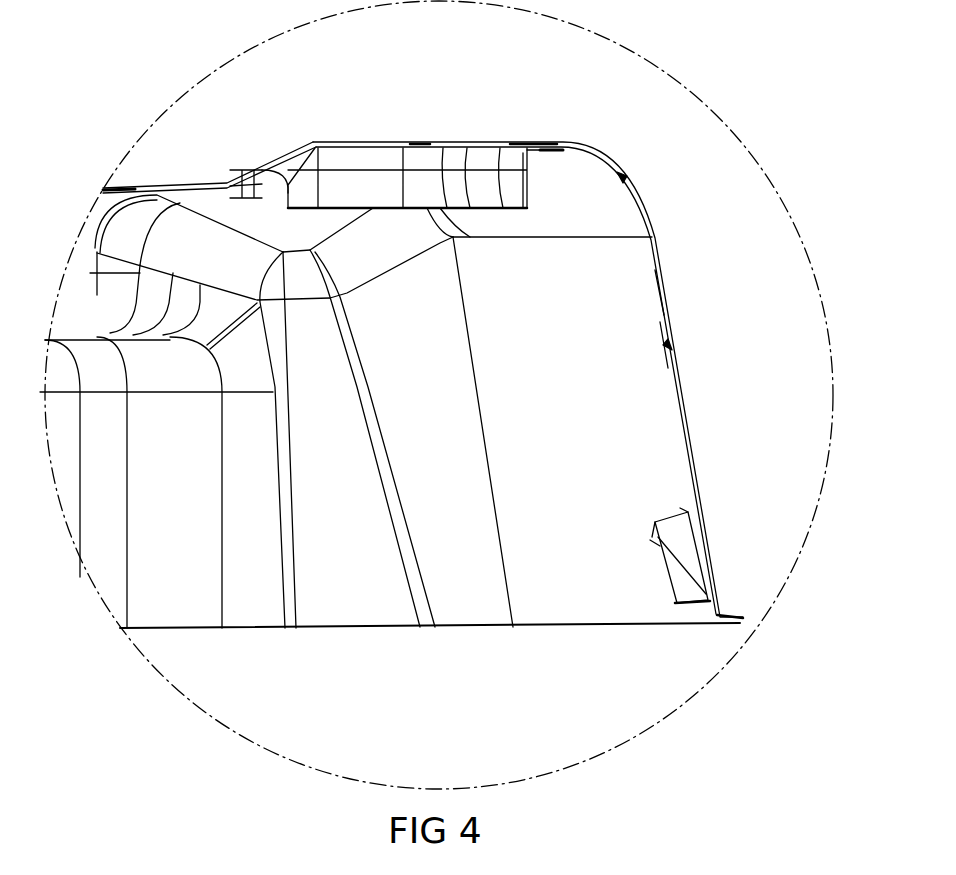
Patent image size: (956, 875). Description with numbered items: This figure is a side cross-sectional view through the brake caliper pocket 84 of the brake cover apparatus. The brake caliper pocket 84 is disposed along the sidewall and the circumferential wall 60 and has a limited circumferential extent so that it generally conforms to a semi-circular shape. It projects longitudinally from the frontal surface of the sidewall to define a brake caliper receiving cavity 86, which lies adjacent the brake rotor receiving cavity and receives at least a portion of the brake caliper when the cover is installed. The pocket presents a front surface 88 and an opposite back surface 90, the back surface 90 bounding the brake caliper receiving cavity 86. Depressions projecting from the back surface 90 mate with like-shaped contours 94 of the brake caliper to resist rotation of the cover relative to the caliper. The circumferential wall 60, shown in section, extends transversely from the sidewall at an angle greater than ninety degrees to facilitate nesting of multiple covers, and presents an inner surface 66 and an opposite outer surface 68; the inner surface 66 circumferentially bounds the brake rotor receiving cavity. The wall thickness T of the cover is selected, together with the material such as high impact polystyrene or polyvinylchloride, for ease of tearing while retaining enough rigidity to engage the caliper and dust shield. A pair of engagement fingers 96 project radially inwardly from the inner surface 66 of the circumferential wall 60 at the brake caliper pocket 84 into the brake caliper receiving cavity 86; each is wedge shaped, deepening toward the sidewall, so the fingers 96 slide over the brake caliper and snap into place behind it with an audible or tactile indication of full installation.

The circumferential wall 60 is at (683, 389).
The inner surface 66 is at (660, 325).
The outer surface 68 is at (670, 302).
The brake caliper pocket 84 is at (503, 90).
The brake caliper receiving cavity 86 is at (455, 580).
The front surface 88 is at (563, 142).
The back surface 90 is at (563, 152).
The like-shaped contours 94 is at (362, 185).
The engagement fingers 96 is at (673, 573).
The thickness T is at (655, 452).